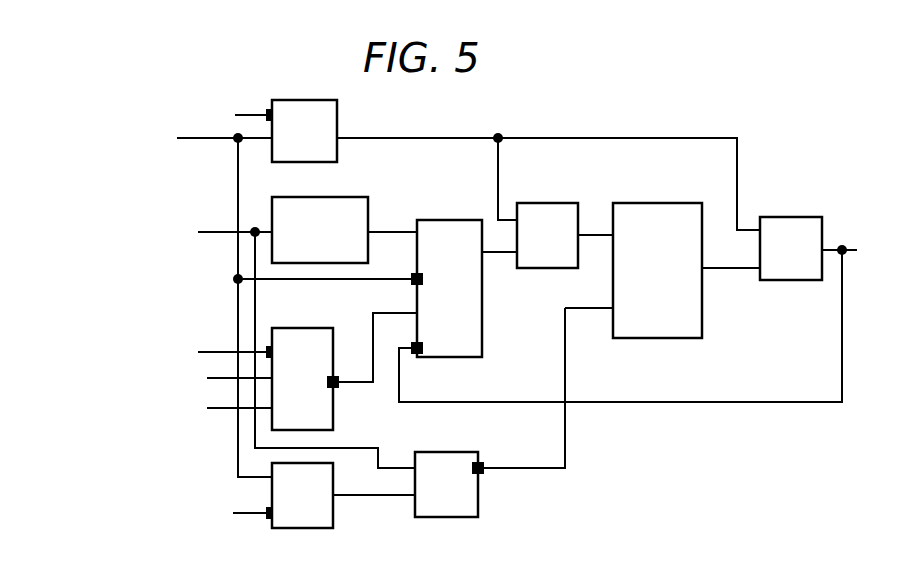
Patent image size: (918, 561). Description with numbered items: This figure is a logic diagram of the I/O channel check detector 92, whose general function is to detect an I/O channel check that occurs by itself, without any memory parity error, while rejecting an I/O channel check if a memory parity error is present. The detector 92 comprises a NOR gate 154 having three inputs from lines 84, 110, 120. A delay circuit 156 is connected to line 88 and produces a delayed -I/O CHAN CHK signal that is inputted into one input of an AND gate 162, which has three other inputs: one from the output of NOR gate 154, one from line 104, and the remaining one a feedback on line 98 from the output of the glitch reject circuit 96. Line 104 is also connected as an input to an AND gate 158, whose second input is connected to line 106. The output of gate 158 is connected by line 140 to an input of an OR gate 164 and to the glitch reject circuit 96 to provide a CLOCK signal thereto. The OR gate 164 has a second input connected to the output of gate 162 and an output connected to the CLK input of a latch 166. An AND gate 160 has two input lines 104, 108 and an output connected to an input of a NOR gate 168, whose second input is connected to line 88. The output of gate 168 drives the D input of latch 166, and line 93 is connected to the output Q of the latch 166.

The line 84 is at (215, 347).
The line 88 is at (225, 227).
The I/O channel check detector 92 is at (553, 128).
The line 93 is at (745, 270).
The glitch reject circuit 96 is at (780, 215).
The line 98 is at (843, 322).
The line 104 is at (225, 139).
The line 106 is at (255, 112).
The line 108 is at (253, 508).
The line 110 is at (212, 382).
The line 120 is at (223, 410).
The line 140 is at (663, 138).
The NOR gate 154 is at (320, 328).
The delay circuit 156 is at (300, 197).
The AND gate 158 is at (337, 118).
The AND gate 160 is at (333, 507).
The AND gate 162 is at (463, 217).
The OR gate 164 is at (530, 203).
The latch 166 is at (650, 203).
The NOR gate 168 is at (478, 497).